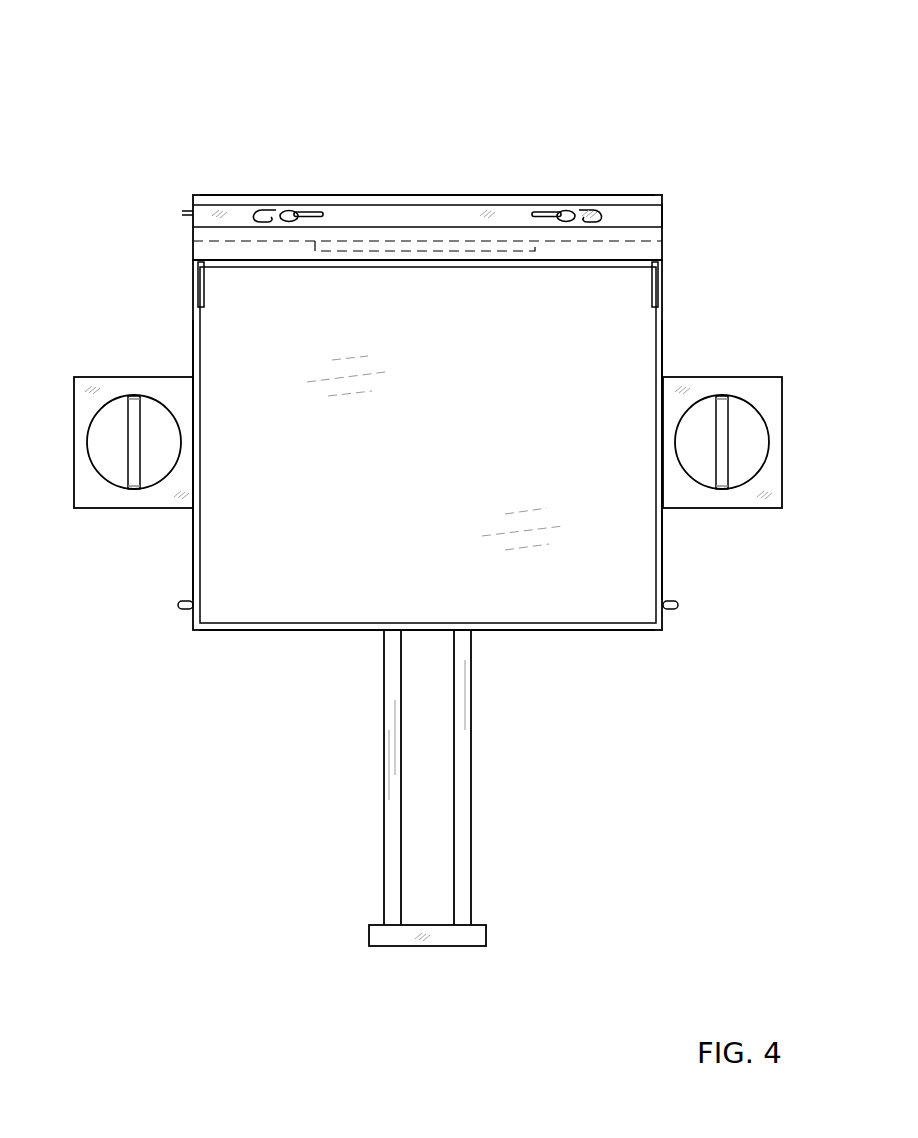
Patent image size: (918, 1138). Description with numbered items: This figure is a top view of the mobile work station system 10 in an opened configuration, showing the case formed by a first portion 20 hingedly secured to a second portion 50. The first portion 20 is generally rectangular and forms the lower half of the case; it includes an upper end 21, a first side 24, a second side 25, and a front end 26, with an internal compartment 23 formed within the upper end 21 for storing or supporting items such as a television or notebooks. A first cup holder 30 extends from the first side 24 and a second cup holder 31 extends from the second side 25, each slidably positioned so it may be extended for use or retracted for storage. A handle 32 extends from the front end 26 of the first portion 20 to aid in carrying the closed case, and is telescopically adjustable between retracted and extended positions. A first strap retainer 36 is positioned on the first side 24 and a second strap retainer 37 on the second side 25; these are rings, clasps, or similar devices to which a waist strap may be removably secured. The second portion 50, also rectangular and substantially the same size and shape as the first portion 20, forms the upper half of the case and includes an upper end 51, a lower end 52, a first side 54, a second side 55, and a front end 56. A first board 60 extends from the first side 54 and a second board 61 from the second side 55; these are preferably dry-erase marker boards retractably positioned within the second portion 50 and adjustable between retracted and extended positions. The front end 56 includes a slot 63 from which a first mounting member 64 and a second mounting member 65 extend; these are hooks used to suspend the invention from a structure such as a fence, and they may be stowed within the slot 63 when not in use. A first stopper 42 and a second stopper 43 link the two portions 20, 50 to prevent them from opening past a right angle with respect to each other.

The mobile work station system 10 is at (155, 90).
The first portion 20 is at (543, 632).
The upper end 21 is at (584, 626).
The internal compartment 23 is at (418, 480).
The first side 24 is at (193, 540).
The second side 25 is at (663, 537).
The front end 26 is at (243, 630).
The first cup holder 30 is at (110, 508).
The second cup holder 31 is at (740, 506).
The handle 32 is at (425, 947).
The first strap retainer 36 is at (178, 605).
The second strap retainer 37 is at (680, 605).
The first stopper 42 is at (198, 268).
The second stopper 43 is at (663, 270).
The second portion 50 is at (453, 194).
The upper end 51 is at (352, 193).
The lower end 52 is at (258, 270).
The first side 54 is at (182, 213).
The second side 55 is at (664, 213).
The front end 56 is at (515, 202).
The first board 60 is at (207, 252).
The second board 61 is at (650, 242).
The slot 63 is at (408, 215).
The first mounting member 64 is at (275, 202).
The second mounting member 65 is at (583, 210).